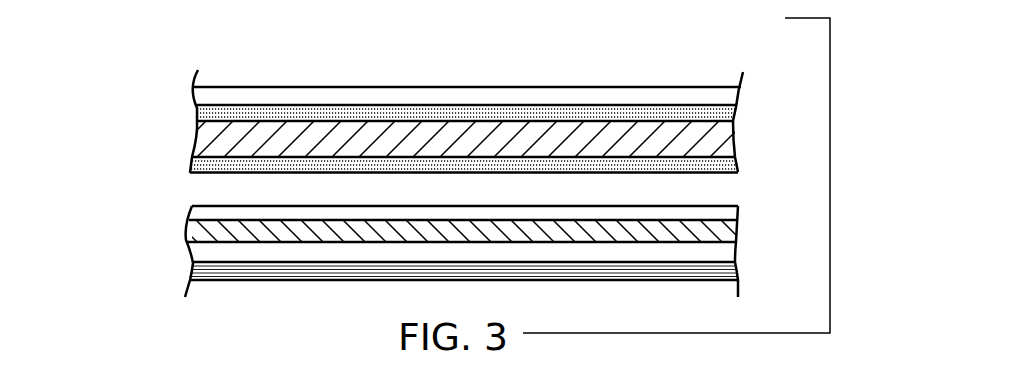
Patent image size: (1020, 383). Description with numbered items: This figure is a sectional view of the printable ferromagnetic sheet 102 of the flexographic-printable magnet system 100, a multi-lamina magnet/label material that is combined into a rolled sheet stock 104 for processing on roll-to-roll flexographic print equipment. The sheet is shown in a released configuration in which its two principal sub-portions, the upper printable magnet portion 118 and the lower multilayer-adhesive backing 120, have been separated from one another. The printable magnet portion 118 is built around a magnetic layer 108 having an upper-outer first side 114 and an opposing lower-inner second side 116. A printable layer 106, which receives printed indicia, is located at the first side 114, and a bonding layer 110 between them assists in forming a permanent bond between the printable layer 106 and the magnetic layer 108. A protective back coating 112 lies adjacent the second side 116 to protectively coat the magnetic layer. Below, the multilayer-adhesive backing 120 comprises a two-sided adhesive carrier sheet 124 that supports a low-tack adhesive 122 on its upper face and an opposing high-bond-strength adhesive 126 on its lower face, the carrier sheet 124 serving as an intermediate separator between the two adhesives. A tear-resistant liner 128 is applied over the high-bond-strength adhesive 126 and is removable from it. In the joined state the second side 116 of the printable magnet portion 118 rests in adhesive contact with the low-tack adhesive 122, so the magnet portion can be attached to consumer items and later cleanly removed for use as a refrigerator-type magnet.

The flexographic-printable magnet system 100 is at (238, 58).
The printable ferromagnetic sheet 102 is at (143, 57).
The rolled sheet stock 104 is at (602, 70).
The printable layer 106 is at (737, 100).
The magnetic layer 108 is at (735, 140).
The bonding layer 110 is at (734, 117).
The protective back coating 112 is at (738, 164).
The first side 114 is at (400, 122).
The second side 116 is at (410, 158).
The printable magnet portion 118 is at (170, 173).
The multilayer-adhesive backing 120 is at (170, 277).
The low-tack adhesive 122 is at (741, 213).
The adhesive carrier sheet 124 is at (737, 233).
The high-bond-strength adhesive 126 is at (737, 255).
The tear-resistant liner 128 is at (738, 272).